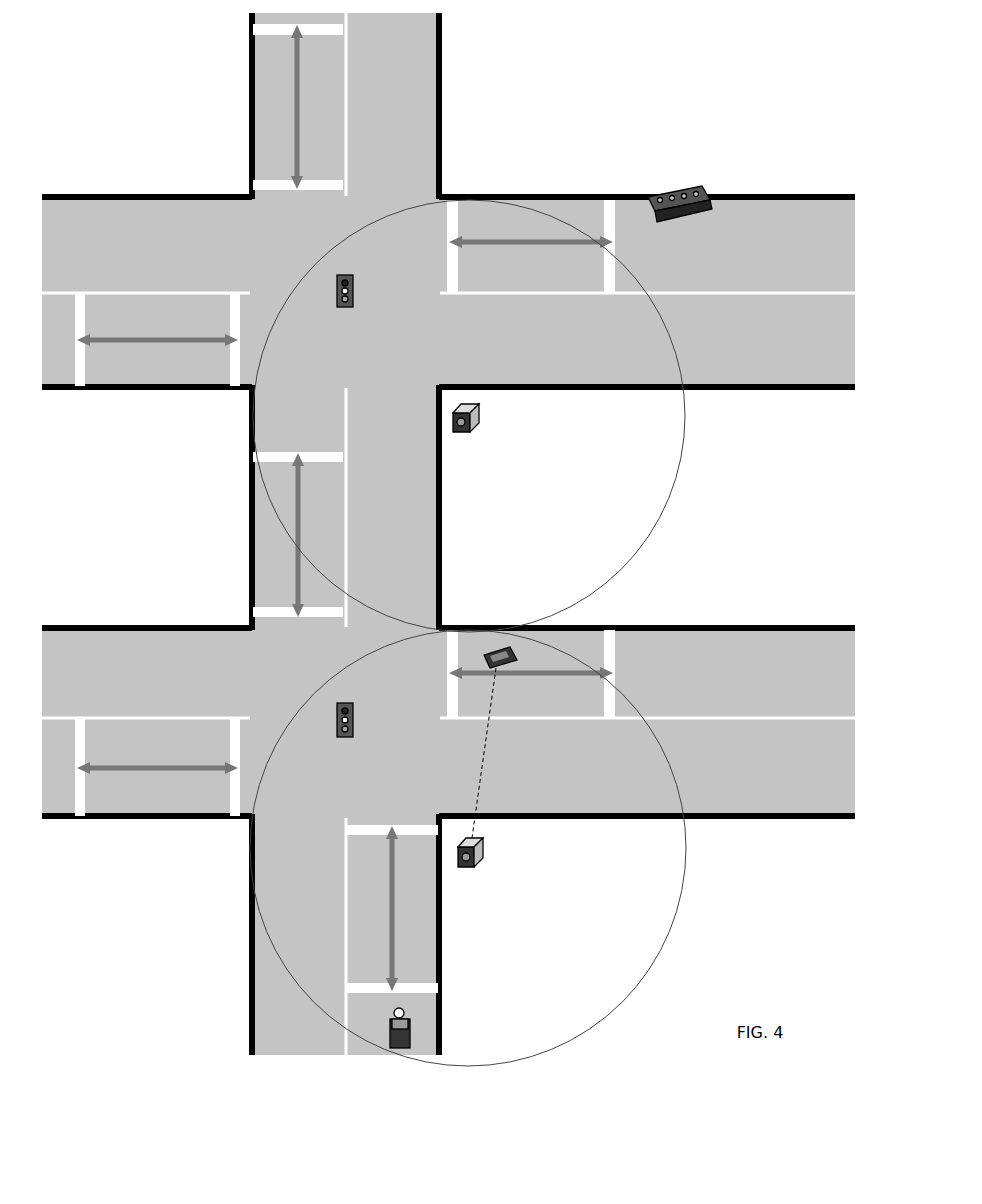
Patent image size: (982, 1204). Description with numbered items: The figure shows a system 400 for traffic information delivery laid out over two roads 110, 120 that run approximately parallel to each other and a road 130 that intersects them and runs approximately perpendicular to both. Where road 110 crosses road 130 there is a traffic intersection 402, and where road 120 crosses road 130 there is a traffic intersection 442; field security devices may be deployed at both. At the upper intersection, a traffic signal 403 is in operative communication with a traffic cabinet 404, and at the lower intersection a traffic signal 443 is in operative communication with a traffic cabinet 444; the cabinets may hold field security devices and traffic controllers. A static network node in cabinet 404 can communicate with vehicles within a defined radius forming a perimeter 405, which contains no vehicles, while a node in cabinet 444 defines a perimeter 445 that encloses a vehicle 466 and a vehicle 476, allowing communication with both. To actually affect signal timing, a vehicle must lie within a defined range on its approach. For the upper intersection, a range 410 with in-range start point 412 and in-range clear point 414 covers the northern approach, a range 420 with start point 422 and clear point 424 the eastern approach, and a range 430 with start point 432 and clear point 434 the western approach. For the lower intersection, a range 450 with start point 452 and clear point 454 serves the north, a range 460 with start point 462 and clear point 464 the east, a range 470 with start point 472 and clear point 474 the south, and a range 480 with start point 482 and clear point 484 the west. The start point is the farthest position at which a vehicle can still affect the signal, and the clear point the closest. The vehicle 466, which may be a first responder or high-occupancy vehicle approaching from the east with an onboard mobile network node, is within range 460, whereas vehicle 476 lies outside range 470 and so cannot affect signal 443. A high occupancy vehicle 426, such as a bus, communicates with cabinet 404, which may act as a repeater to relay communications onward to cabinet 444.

The system 400 is at (740, 955).
The road 110 is at (775, 387).
The road 120 is at (775, 816).
The road 130 is at (448, 534).
The traffic intersection 402 is at (280, 275).
The traffic signal 403 is at (338, 287).
The traffic cabinet 404 is at (480, 424).
The perimeter 405 is at (680, 460).
The range 410 is at (258, 107).
The in-range start point 412 is at (250, 26).
The in-range clear point 414 is at (250, 186).
The range 420 is at (558, 221).
The in-range start point 422 is at (611, 200).
The in-range clear point 424 is at (452, 200).
The high occupancy vehicle 426 is at (682, 195).
The range 430 is at (157, 370).
The in-range start point 432 is at (80, 388).
The in-range clear point 434 is at (234, 388).
The traffic intersection 442 is at (280, 711).
The traffic signal 443 is at (338, 716).
The traffic cabinet 444 is at (484, 860).
The perimeter 445 is at (680, 912).
The range 450 is at (259, 534).
The in-range start point 452 is at (250, 462).
The in-range clear point 454 is at (250, 614).
The range 460 is at (560, 706).
The in-range start point 462 is at (611, 628).
The in-range clear point 464 is at (452, 628).
The vehicle 466 is at (497, 668).
The range 470 is at (435, 936).
The in-range start point 472 is at (443, 988).
The in-range clear point 474 is at (443, 840).
The vehicle 476 is at (412, 1027).
The range 480 is at (157, 798).
The in-range start point 482 is at (80, 818).
The in-range clear point 484 is at (234, 818).